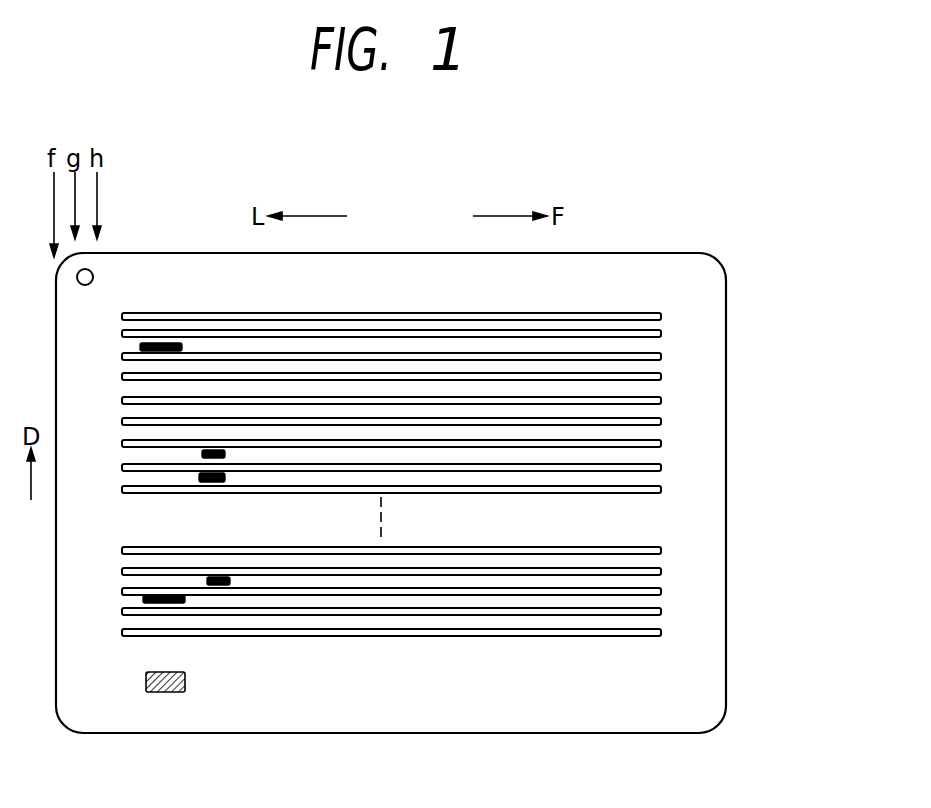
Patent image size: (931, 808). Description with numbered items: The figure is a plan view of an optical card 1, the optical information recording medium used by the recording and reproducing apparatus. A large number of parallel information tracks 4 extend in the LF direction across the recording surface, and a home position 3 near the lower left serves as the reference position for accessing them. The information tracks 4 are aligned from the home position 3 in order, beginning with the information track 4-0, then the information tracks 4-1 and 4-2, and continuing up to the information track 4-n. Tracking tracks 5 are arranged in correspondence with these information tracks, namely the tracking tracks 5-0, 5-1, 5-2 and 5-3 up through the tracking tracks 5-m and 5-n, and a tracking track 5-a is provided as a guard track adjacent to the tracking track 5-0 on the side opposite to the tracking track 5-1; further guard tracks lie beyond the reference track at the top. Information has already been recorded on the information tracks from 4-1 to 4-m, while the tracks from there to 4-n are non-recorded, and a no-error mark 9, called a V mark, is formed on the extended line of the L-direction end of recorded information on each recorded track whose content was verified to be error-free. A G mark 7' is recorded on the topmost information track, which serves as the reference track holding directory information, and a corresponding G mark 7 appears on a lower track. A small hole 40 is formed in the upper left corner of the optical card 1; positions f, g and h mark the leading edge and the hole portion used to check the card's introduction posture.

The optical card 1 is at (618, 253).
The home position 3 is at (146, 682).
The information tracks 4 is at (124, 412).
The tracking tracks 5 is at (124, 489).
The G mark 7 is at (133, 604).
The G mark 7' is at (132, 347).
The no-error mark (V mark) 9 is at (205, 454).
The small hole 40 is at (92, 271).
The information track 4-n is at (657, 366).
The tracking track 5-n is at (662, 377).
The information track 4-m is at (657, 456).
The tracking track 5-m is at (662, 467).
The tracking track 5-3 is at (662, 550).
The information track 4-2 is at (657, 561).
The tracking track 5-2 is at (662, 571).
The information track 4-1 is at (657, 581).
The tracking track 5-1 is at (662, 591).
The information track 4-0 is at (657, 601).
The tracking track 5-0 is at (662, 611).
The tracking track (guard track) 5-a is at (662, 632).